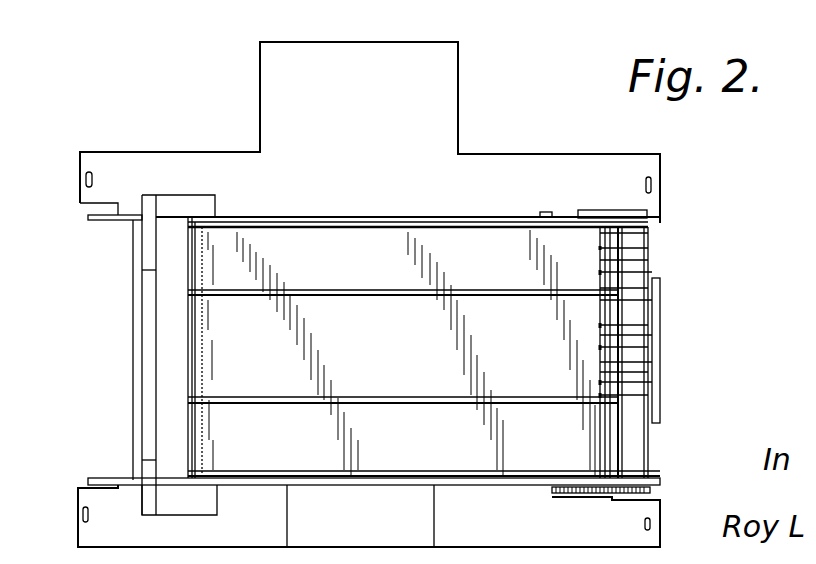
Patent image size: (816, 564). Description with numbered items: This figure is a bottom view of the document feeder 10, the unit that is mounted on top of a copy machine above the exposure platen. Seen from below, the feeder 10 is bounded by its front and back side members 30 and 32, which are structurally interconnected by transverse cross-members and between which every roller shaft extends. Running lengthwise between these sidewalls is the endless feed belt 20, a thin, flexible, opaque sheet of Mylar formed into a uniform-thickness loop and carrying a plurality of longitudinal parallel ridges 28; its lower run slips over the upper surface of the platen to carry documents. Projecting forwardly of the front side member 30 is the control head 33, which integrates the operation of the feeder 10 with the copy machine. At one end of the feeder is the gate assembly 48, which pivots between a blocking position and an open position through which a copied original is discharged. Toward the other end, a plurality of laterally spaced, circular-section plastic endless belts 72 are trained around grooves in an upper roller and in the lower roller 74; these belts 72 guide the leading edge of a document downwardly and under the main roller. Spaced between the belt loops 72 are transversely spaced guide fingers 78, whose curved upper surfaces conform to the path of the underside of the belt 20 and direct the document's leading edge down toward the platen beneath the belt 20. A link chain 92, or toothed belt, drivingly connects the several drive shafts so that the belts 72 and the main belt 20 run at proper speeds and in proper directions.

The document feeder 10 is at (531, 134).
The control head 33 is at (445, 72).
The endless feed belt 20 is at (474, 360).
The longitudinal parallel ridges 28 is at (300, 217).
The gate assembly 48 is at (148, 382).
The front side member 30 is at (656, 224).
The back side member 32 is at (658, 482).
The link chain 92 is at (567, 495).
The lower roller 74 is at (640, 316).
The endless belts 72 is at (648, 235).
The guide fingers 78 is at (612, 290).